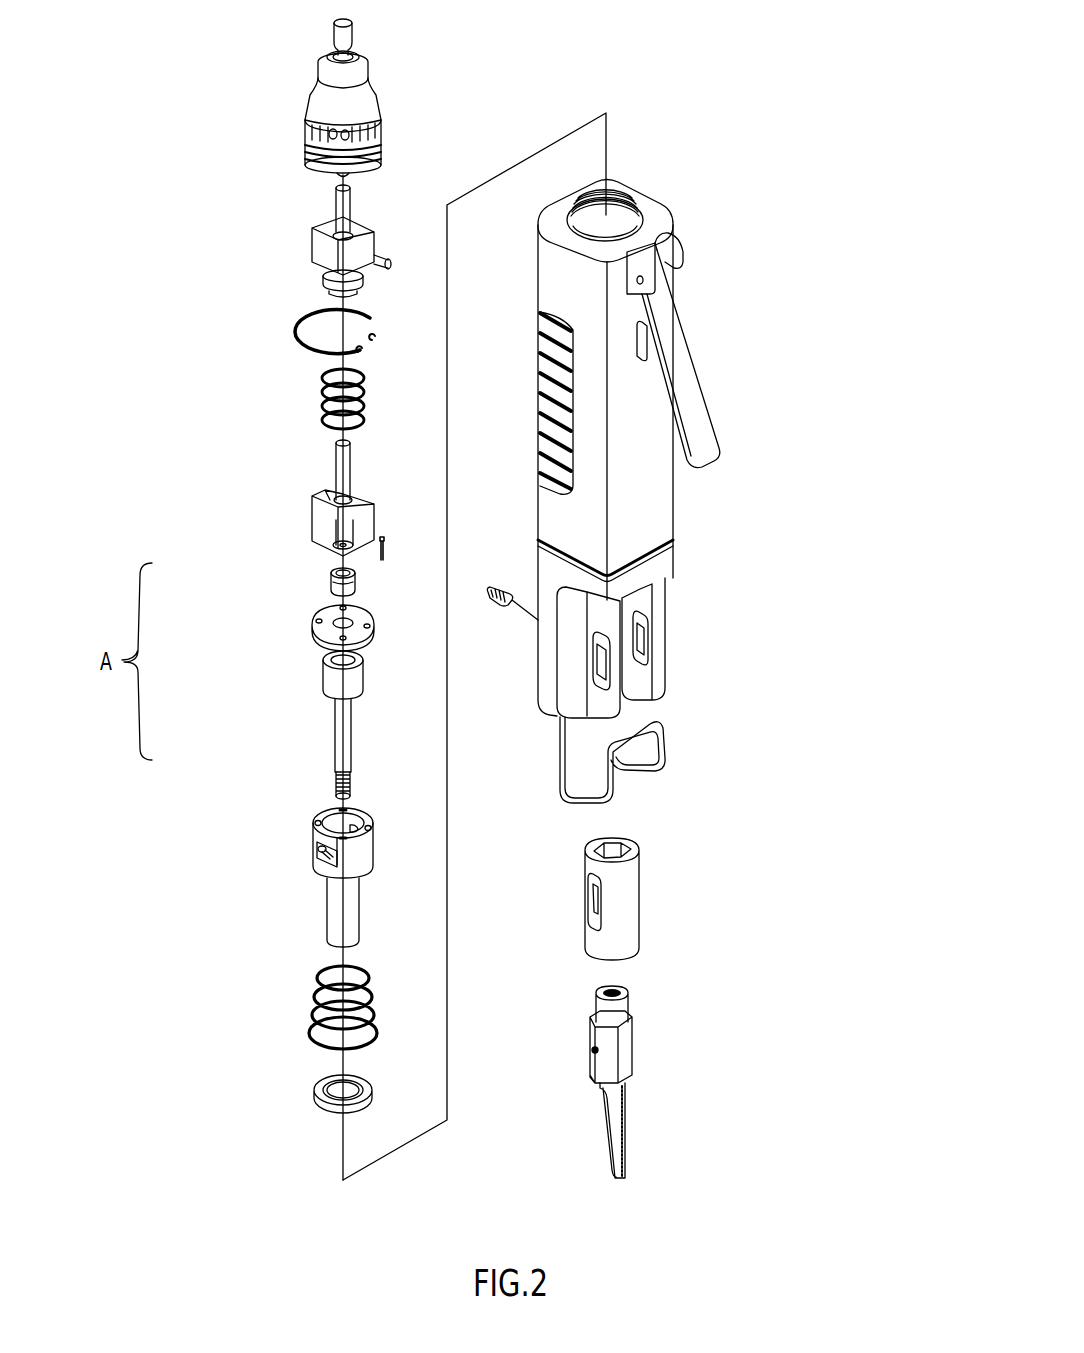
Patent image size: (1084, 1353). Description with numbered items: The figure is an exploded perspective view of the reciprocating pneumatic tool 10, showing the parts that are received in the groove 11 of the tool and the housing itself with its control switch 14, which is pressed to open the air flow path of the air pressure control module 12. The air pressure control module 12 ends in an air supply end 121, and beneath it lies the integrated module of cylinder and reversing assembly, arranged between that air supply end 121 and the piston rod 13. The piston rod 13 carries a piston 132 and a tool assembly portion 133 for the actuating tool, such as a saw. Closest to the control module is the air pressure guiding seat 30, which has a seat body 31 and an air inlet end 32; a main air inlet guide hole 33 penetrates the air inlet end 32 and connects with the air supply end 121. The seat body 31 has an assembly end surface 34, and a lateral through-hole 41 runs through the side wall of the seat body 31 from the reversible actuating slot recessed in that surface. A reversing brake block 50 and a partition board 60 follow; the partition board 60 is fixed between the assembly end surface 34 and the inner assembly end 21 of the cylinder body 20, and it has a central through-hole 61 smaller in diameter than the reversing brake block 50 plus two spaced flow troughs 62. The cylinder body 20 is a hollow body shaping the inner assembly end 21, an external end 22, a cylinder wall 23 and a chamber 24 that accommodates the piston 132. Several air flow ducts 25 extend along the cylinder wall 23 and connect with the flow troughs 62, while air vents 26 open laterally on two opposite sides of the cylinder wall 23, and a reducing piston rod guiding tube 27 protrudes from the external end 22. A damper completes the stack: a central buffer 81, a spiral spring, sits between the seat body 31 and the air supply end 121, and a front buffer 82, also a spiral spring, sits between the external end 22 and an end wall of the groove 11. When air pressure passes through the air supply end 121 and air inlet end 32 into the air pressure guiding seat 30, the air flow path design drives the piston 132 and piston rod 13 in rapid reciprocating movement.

The reciprocating pneumatic tool 10 is at (745, 157).
The groove 11 is at (617, 236).
The air pressure control module 12 is at (297, 237).
The air supply end 121 is at (330, 290).
The piston rod 13 is at (372, 725).
The piston 132 is at (365, 675).
The tool assembly portion 133 is at (352, 778).
The control switch 14 is at (698, 413).
The cylinder body 20 is at (302, 832).
The inner assembly end 21 is at (371, 810).
The external end 22 is at (366, 880).
The cylinder wall 23 is at (368, 848).
The chamber 24 is at (338, 830).
The air flow ducts 25 is at (318, 822).
The air vents 26 is at (322, 853).
The reducing piston rod guiding tube 27 is at (327, 905).
The air pressure guiding seat 30 is at (295, 522).
The seat body 31 is at (372, 505).
The air inlet end 32 is at (333, 462).
The main air inlet guide hole 33 is at (333, 442).
The assembly end surface 34 is at (375, 562).
The lateral through-hole 41 is at (325, 542).
The reversing brake block 50 is at (330, 578).
The partition board 60 is at (318, 628).
The through-hole 61 is at (355, 610).
The flow troughs 62 is at (370, 628).
The central buffer 81 is at (325, 390).
The front buffer 82 is at (320, 1000).